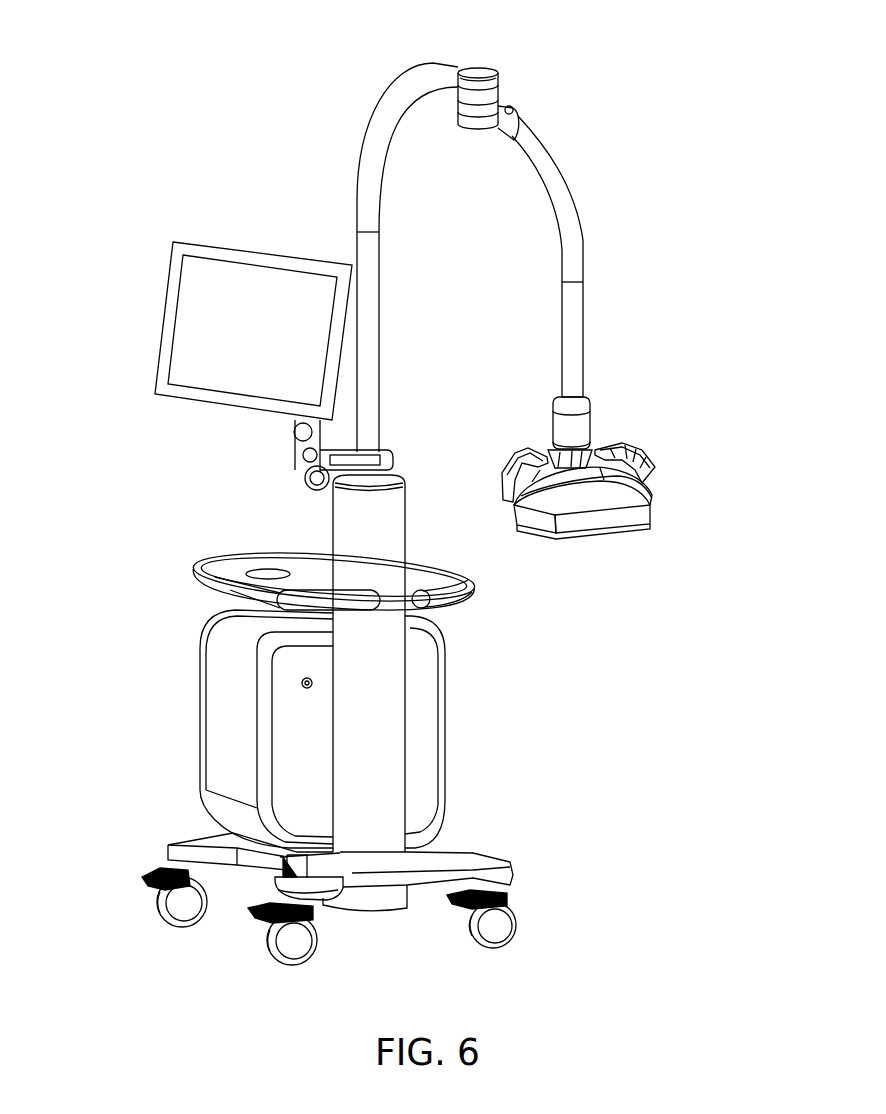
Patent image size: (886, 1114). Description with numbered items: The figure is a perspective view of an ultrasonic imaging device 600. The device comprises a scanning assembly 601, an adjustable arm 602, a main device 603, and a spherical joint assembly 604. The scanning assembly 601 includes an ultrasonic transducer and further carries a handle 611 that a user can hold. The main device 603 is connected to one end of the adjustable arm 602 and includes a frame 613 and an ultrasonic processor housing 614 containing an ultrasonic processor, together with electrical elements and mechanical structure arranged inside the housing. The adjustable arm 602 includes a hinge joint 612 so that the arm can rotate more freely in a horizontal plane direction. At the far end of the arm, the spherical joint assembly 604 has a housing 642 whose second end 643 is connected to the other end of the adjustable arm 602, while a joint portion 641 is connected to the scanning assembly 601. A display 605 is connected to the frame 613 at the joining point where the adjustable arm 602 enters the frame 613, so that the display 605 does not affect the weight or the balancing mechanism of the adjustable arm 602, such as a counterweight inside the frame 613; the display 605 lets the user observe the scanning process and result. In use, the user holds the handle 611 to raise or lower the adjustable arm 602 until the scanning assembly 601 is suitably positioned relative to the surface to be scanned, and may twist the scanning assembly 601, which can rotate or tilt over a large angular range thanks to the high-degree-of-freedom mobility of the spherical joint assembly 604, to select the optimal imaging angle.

The ultrasonic imaging device 600 is at (818, 46).
The scanning assembly 601 is at (653, 503).
The adjustable arm 602 is at (572, 178).
The main device 603 is at (203, 638).
The spherical joint assembly 604 is at (590, 432).
The display 605 is at (210, 337).
The handle 611 is at (655, 462).
The hinge joint 612 is at (498, 77).
The frame 613 is at (388, 526).
The ultrasonic processor housing 614 is at (428, 723).
The joint portion 641 is at (545, 452).
The housing 642 is at (512, 388).
The second end 643 is at (555, 398).